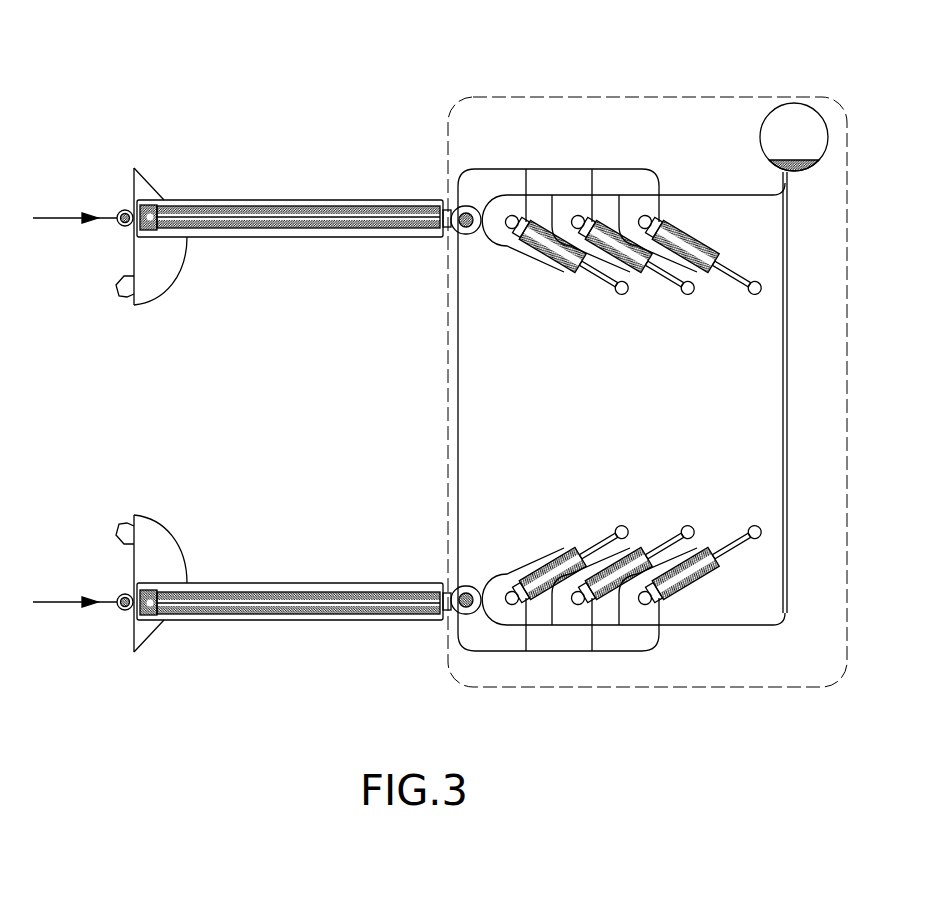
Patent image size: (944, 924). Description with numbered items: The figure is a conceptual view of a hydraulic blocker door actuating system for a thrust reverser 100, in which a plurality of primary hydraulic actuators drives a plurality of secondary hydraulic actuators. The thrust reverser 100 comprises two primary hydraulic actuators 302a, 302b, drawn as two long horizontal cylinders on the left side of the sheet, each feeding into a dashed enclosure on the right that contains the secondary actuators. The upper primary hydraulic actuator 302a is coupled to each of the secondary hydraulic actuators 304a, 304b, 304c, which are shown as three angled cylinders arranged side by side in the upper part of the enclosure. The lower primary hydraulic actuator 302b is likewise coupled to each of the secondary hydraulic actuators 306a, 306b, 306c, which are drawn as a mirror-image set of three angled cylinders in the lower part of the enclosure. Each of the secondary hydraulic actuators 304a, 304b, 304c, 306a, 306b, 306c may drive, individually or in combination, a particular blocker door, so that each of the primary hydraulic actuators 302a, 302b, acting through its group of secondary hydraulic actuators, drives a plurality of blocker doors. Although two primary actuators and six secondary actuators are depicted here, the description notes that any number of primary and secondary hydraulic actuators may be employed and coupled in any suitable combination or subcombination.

The thrust reverser 100 is at (155, 58).
The primary hydraulic actuator 302a is at (226, 199).
The primary hydraulic actuator 302b is at (266, 621).
The secondary hydraulic actuator 304a is at (538, 221).
The secondary hydraulic actuator 304b is at (620, 221).
The secondary hydraulic actuator 304c is at (681, 223).
The secondary hydraulic actuator 306a is at (543, 603).
The secondary hydraulic actuator 306b is at (623, 594).
The secondary hydraulic actuator 306c is at (686, 598).